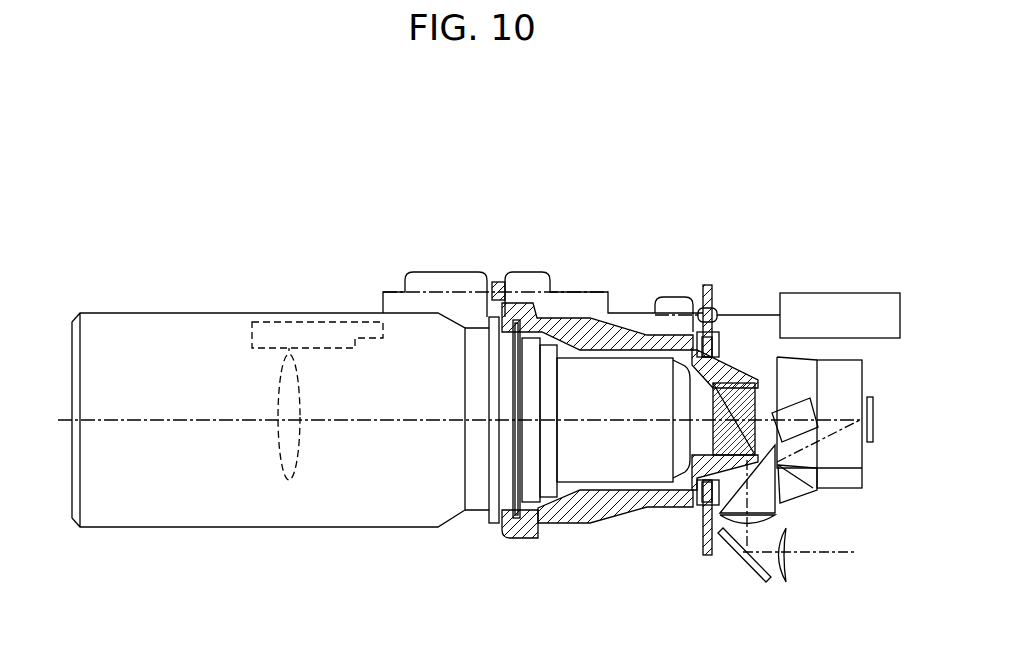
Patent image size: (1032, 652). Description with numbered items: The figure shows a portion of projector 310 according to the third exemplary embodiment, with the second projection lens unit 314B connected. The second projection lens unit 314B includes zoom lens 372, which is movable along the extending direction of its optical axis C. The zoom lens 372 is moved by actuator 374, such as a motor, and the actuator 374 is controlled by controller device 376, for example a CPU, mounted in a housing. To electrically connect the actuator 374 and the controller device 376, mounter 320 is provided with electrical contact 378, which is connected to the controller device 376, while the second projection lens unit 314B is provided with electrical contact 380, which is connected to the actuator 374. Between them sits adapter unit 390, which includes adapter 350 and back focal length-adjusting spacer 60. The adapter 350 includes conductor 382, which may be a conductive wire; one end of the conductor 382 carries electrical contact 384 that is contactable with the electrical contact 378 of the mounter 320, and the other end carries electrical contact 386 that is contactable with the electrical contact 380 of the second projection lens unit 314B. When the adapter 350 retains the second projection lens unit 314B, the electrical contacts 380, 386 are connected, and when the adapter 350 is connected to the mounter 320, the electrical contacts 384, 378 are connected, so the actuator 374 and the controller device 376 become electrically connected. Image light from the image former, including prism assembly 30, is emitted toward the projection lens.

The projector 310 is at (323, 254).
The second projection lens unit 314B is at (139, 478).
The actuator 374 is at (252, 340).
The zoom lens 372 is at (300, 430).
The electrical contact 380 is at (493, 300).
The electrical contact 386 is at (500, 300).
The conductor 382 is at (602, 290).
The electrical contact 384 is at (698, 313).
The electrical contact 378 is at (700, 313).
The mounter 320 is at (712, 297).
The controller device 376 is at (823, 329).
The back focal length-adjusting spacer 60 is at (722, 438).
The adapter 350 is at (520, 537).
The adapter unit 390 is at (580, 408).
The prism assembly 30 is at (858, 521).
The optical axis C is at (453, 405).